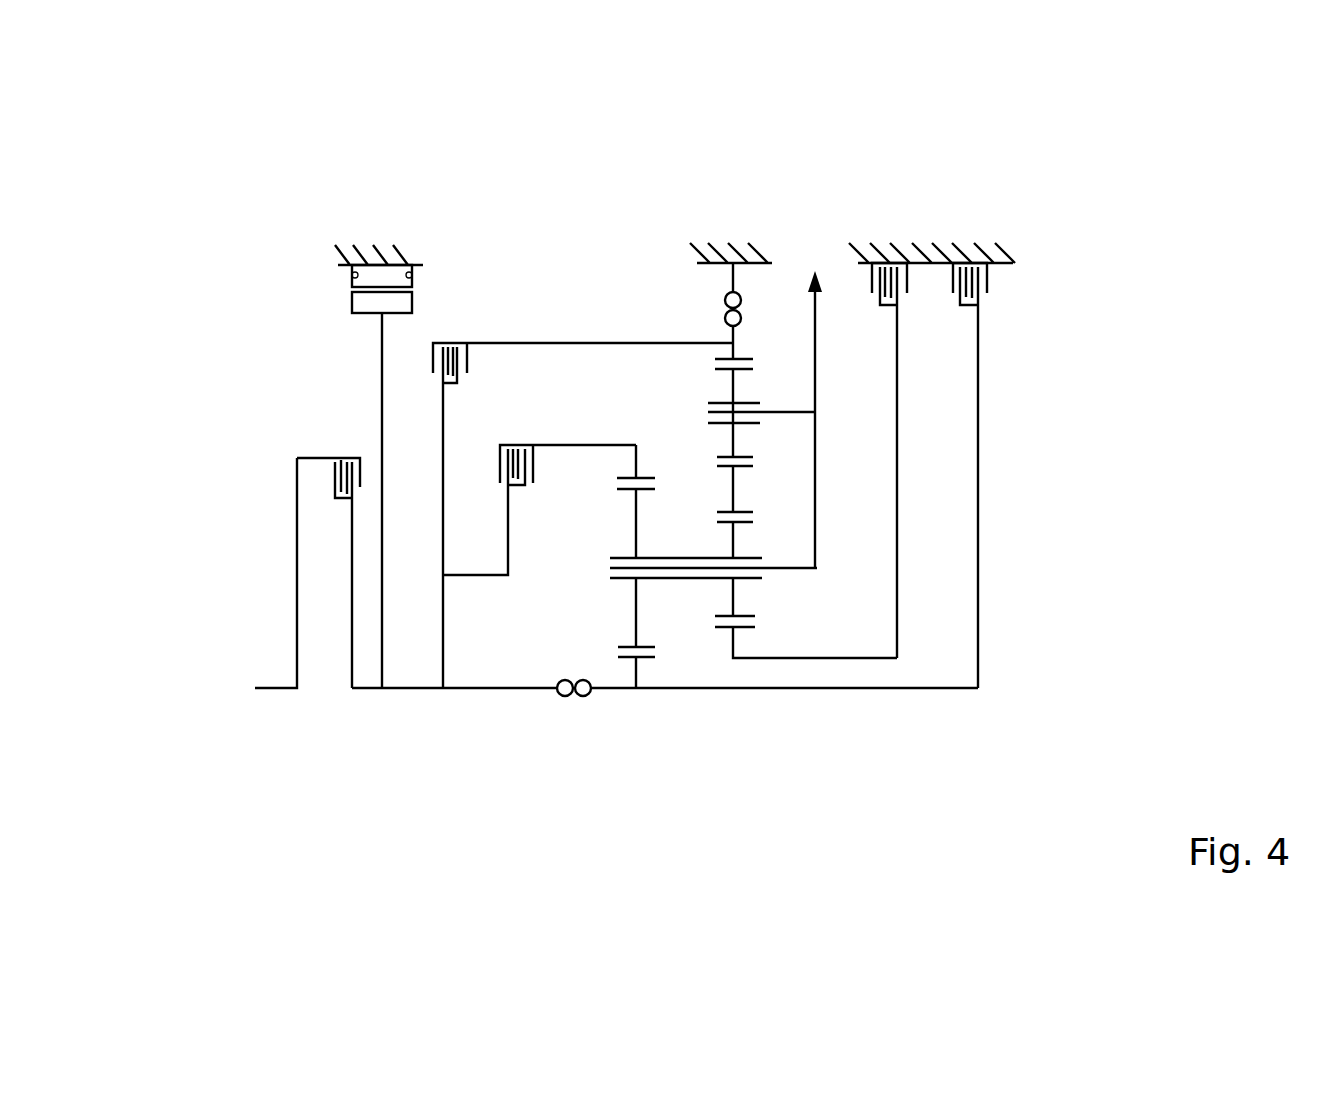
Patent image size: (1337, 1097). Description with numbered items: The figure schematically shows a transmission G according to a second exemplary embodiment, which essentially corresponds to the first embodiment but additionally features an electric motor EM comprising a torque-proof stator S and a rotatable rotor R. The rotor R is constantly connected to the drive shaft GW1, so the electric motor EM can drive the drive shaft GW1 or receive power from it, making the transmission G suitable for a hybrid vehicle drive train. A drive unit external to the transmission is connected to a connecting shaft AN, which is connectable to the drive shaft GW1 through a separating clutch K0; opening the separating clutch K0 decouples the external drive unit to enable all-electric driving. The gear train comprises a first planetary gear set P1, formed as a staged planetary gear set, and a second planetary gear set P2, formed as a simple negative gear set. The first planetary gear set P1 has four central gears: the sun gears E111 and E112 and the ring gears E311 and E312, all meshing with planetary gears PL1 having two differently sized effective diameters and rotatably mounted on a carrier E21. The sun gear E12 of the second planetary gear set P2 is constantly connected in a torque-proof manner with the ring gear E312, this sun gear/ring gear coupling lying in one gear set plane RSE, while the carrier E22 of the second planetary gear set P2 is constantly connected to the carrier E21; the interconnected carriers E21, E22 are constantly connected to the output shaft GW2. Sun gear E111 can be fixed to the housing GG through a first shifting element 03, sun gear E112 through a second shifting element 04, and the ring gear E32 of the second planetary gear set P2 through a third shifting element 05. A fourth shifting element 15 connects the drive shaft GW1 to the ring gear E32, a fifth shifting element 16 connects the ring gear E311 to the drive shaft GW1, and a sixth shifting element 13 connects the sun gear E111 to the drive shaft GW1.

The electric motor EM is at (288, 284).
The stator S is at (352, 275).
The rotor R is at (353, 298).
The transmission G is at (278, 388).
The connecting shaft AN is at (293, 695).
The separating clutch K0 is at (318, 482).
The drive shaft GW1 is at (397, 695).
The fourth shifting element 15 is at (447, 328).
The fifth shifting element 16 is at (482, 454).
The central gear E311 is at (618, 474).
The planetary gears PL1 is at (636, 614).
The central gear E111 is at (645, 662).
The first planetary gear set P1 is at (750, 595).
The carrier E21 is at (797, 572).
The central gear E112 is at (727, 628).
The sixth shifting element 13 is at (562, 700).
The output shaft GW2 is at (818, 380).
The second planetary gear set P2 is at (714, 400).
The carrier E22 is at (793, 415).
The central gear E32 is at (742, 357).
The central gear E12 is at (740, 468).
The central gear E312 is at (716, 500).
The third shifting element 05 is at (710, 301).
The gear set plane RSE is at (733, 222).
The housing GG is at (760, 247).
The second shifting element 04 is at (916, 302).
The first shifting element 03 is at (1000, 284).